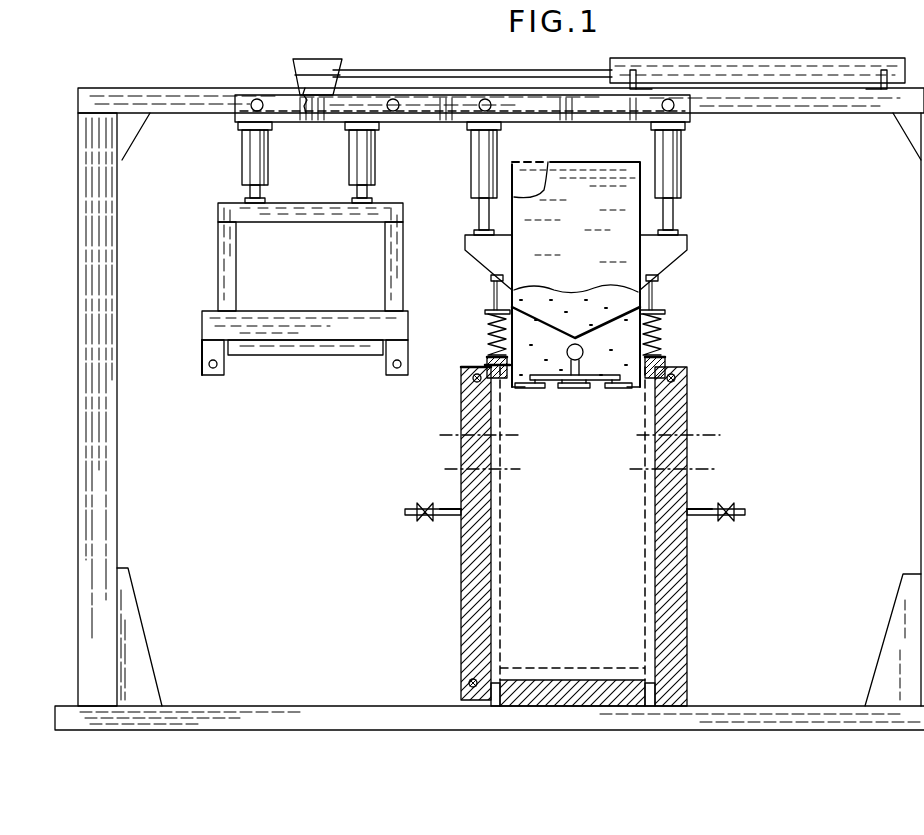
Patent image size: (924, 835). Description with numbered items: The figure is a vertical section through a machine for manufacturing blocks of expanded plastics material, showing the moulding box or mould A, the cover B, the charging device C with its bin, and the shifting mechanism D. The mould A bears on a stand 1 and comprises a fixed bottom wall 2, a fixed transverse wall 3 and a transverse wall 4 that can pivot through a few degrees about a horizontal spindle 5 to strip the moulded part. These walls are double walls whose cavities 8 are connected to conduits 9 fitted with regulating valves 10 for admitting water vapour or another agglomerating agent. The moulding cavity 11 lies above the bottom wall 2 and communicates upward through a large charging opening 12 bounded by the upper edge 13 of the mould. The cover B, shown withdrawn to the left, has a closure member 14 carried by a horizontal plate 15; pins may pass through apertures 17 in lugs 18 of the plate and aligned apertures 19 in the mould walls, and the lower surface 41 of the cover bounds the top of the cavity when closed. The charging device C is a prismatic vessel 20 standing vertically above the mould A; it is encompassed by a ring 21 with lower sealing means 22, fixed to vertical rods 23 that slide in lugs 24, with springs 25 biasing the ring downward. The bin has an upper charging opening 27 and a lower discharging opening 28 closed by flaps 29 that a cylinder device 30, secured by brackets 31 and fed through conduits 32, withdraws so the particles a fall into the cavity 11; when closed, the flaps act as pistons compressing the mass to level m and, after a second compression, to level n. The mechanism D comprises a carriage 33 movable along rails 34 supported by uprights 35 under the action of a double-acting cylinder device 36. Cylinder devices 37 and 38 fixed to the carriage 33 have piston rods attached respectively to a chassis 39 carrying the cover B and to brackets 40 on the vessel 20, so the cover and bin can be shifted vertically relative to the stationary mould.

The stand 1 is at (386, 707).
The fixed bottom wall 2 is at (579, 688).
The fixed transverse wall 3 is at (670, 605).
The pivotably movable transverse wall 4 is at (467, 570).
The horizontal spindle 5 is at (470, 682).
The cavities 8 is at (645, 545).
The conduits 9 is at (447, 515).
The regulating valves 10 is at (416, 522).
The moulding cavity 11 is at (504, 490).
The charging opening 12 is at (476, 364).
The upper edge of the mould 13 is at (478, 365).
The closure member 14 is at (280, 348).
The horizontal plate 15 is at (272, 324).
The apertures in lugs 17 is at (215, 368).
The lugs 18 is at (203, 348).
The apertures in mould walls 19 is at (473, 378).
The prismatic vessel 20 is at (576, 274).
The ring 21 is at (665, 351).
The sealing means 22 is at (665, 357).
The vertical rods 23 is at (658, 278).
The brackets or lugs 24 is at (665, 300).
The springs 25 is at (665, 328).
The charging opening of the bin 27 is at (549, 181).
The discharging opening 28 is at (624, 388).
The flaps or shutters 29 is at (574, 387).
The cylinder device 30 is at (583, 357).
The brackets 31 is at (560, 320).
The conduits 32 is at (596, 305).
The carriage 33 is at (451, 101).
The rails 34 is at (185, 100).
The uprights 35 is at (120, 462).
The double-acting cylinder device 36 is at (828, 64).
The cylinder devices 37 is at (258, 158).
The cylinder devices 38 is at (486, 152).
The chassis 39 is at (280, 222).
The brackets 40 is at (485, 245).
The lower surface of the cover 41 is at (333, 354).
The moulding box or mould A is at (571, 536).
The cover B is at (280, 308).
The charging device C is at (576, 279).
The shifting mechanism D is at (702, 50).
The particles a is at (532, 388).
The level n- n is at (573, 435).
The level m- m is at (576, 469).